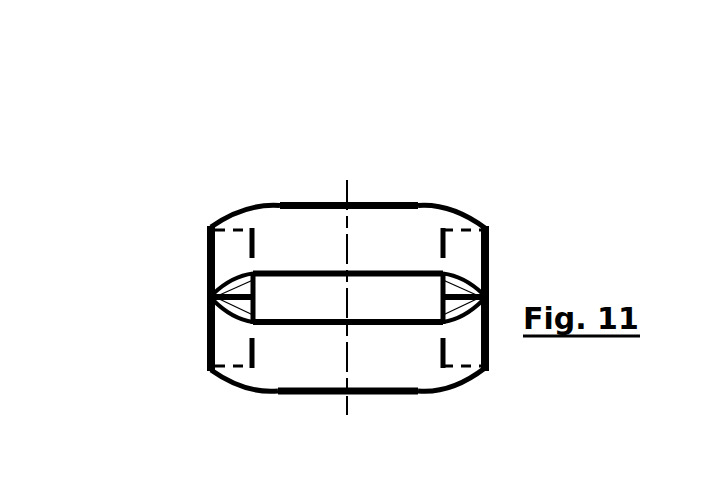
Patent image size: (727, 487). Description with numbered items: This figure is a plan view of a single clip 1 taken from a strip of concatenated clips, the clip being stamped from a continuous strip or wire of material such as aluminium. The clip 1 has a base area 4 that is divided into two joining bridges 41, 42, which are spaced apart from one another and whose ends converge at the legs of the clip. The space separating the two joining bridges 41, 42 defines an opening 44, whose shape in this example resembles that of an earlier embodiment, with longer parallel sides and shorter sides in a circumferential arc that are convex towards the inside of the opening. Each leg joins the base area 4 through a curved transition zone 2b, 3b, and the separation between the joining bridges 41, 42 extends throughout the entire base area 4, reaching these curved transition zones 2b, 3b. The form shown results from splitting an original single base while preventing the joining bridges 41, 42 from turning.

The clip 1 is at (180, 259).
The curved transition zone 2b is at (235, 243).
The curved transition zone 3b is at (455, 222).
The base area 4 is at (293, 227).
The joining bridge 41 is at (400, 397).
The joining bridge 42 is at (402, 218).
The opening 44 is at (319, 286).